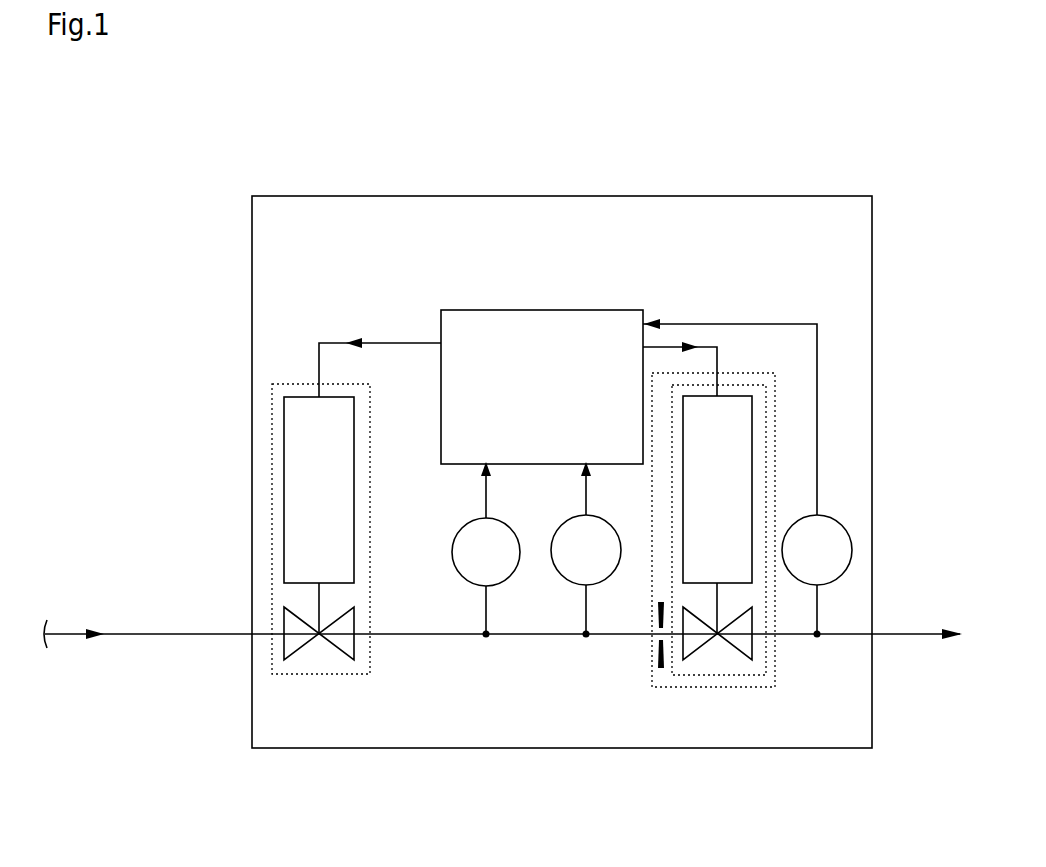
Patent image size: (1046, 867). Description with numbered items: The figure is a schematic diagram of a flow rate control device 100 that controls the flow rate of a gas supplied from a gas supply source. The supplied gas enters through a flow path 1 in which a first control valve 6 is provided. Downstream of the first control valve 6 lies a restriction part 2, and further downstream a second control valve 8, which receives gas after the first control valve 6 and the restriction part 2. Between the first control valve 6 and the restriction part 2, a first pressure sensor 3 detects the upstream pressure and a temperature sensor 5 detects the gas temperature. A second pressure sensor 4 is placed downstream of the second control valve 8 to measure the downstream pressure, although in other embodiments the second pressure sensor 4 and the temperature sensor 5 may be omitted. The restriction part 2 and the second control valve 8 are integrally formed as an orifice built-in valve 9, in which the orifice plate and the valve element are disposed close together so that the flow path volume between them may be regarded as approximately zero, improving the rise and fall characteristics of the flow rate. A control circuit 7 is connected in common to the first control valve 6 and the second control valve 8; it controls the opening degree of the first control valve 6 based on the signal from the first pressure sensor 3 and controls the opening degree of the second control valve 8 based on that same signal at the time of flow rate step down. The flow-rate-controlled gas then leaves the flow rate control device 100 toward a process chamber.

The flow rate control device 100 is at (715, 196).
The flow path 1 is at (214, 637).
The restriction part 2 is at (650, 662).
The first pressure sensor 3 is at (565, 580).
The second pressure sensor 4 is at (833, 583).
The temperature sensor 5 is at (458, 578).
The first control valve 6 is at (327, 675).
The control circuit 7 is at (532, 310).
The second control valve 8 is at (713, 676).
The orifice built-in valve 9 is at (762, 688).